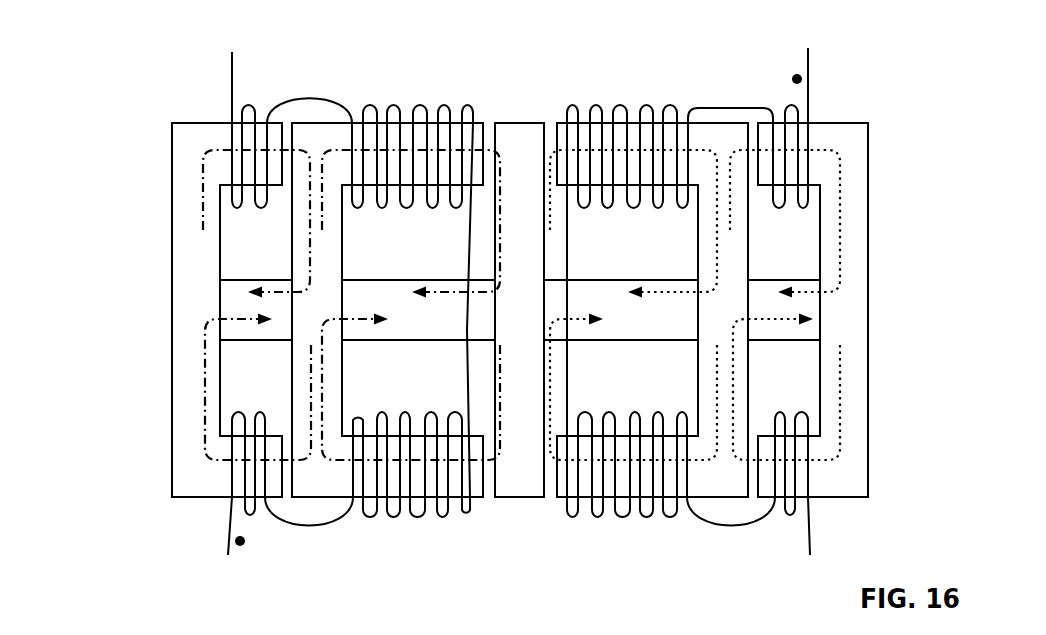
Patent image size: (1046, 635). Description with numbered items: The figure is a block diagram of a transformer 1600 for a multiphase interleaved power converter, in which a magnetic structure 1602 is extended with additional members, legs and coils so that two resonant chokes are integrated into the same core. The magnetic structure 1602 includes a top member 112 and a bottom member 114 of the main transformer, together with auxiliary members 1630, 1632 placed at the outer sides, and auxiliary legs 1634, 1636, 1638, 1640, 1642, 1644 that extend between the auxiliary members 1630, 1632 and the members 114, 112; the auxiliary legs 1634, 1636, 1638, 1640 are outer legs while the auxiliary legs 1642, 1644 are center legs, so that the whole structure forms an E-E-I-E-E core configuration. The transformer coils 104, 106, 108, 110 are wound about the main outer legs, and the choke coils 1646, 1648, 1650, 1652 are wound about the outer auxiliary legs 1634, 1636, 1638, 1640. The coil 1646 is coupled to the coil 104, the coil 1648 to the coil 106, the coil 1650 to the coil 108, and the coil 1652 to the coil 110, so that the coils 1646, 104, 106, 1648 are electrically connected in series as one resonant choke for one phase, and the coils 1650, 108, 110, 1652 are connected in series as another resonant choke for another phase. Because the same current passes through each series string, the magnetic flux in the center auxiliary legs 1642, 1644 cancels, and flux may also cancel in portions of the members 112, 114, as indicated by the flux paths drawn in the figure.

The transformer 1600 is at (155, 60).
The magnetic structure 1602 is at (905, 144).
The coil 104 is at (420, 105).
The coil 106 is at (413, 513).
The coil 108 is at (600, 105).
The coil 110 is at (622, 513).
The top member 112 is at (738, 252).
The bottom member 114 is at (348, 252).
The auxiliary member 1630 is at (172, 232).
The auxiliary member 1632 is at (867, 232).
The outer auxiliary leg 1634 is at (263, 130).
The outer auxiliary leg 1636 is at (217, 477).
The outer auxiliary leg 1638 is at (833, 130).
The outer auxiliary leg 1640 is at (827, 480).
The center auxiliary leg 1642 is at (243, 330).
The center auxiliary leg 1644 is at (790, 332).
The coil 1646 is at (250, 103).
The coil 1648 is at (247, 500).
The coil 1650 is at (790, 105).
The coil 1652 is at (793, 500).